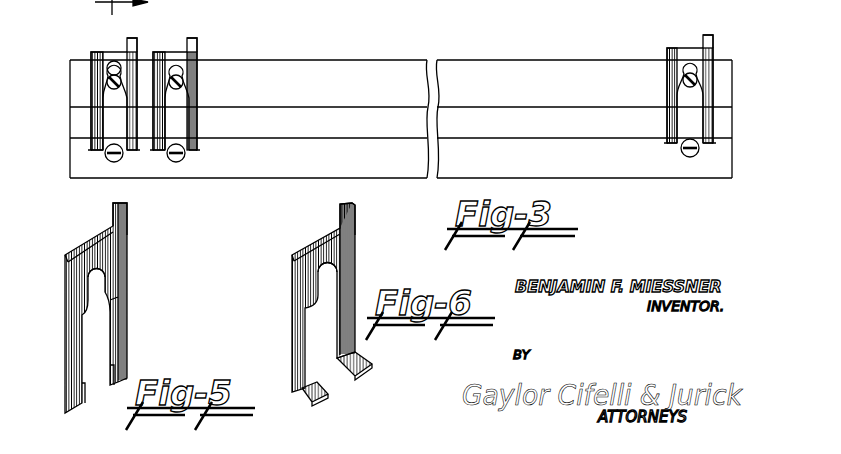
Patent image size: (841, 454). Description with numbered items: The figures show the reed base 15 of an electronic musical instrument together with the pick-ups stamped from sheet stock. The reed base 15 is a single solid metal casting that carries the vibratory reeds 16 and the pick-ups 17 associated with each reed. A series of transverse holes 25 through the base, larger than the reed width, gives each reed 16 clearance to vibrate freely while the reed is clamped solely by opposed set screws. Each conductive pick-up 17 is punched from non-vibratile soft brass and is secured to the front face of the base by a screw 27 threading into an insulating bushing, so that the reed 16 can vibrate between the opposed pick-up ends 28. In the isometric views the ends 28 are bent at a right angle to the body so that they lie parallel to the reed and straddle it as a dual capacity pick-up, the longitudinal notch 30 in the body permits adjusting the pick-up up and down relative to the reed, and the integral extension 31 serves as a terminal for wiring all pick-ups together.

In FIG. 3, the reed base 15 is at (338, 70).
In FIG. 3, the vibratory reed 16 is at (108, 159).
In FIG. 3, the pick-up 17 is at (97, 53).
In FIG. 5, the pick-up 17 is at (72, 263).
In FIG. 6, the pick-up 17 is at (305, 265).
In FIG. 3, the transverse hole 25 is at (116, 163).
In FIG. 3, the screw 27 is at (107, 82).
In FIG. 3, the pick-up end 28 is at (92, 150).
In FIG. 5, the pick-up end 28 is at (112, 375).
In FIG. 6, the pick-up end 28 is at (366, 371).
In FIG. 3, the longitudinal notch 30 is at (114, 68).
In FIG. 5, the longitudinal notch 30 is at (97, 272).
In FIG. 6, the longitudinal notch 30 is at (325, 272).
In FIG. 3, the integral extension 31 is at (128, 43).
In FIG. 5, the integral extension 31 is at (113, 212).
In FIG. 6, the integral extension 31 is at (340, 207).